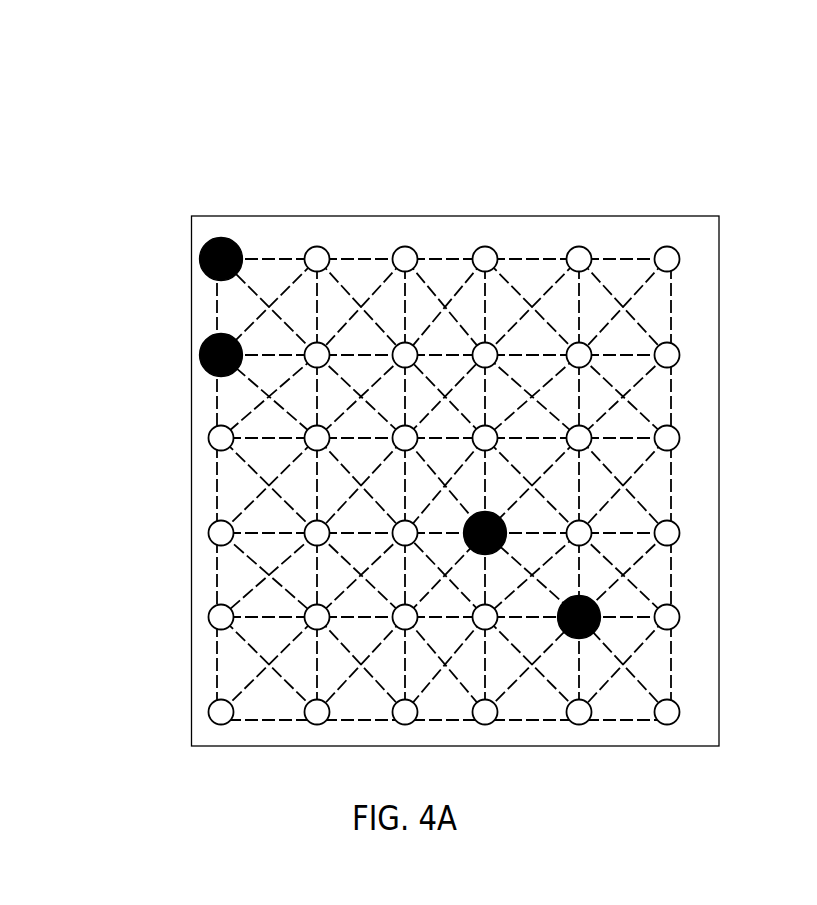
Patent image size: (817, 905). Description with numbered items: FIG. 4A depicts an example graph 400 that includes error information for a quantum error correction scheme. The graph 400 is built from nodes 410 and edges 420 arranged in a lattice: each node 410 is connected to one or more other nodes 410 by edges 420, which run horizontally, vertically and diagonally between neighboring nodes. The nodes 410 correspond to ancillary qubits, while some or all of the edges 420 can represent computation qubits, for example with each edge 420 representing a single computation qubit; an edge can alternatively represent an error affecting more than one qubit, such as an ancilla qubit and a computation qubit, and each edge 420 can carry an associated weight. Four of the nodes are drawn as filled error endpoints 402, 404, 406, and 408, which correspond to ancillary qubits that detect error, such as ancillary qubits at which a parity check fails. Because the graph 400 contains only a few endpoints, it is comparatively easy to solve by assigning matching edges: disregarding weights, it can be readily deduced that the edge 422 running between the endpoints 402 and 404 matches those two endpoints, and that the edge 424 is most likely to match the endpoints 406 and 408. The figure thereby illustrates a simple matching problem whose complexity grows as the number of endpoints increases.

The graph 400 is at (190, 131).
The error endpoint 402 is at (207, 243).
The error endpoint 404 is at (200, 365).
The error endpoint 406 is at (465, 542).
The error endpoint 408 is at (600, 616).
The node 410 is at (322, 247).
The edge 420 is at (358, 257).
The edge 422 is at (215, 308).
The edge 424 is at (532, 570).